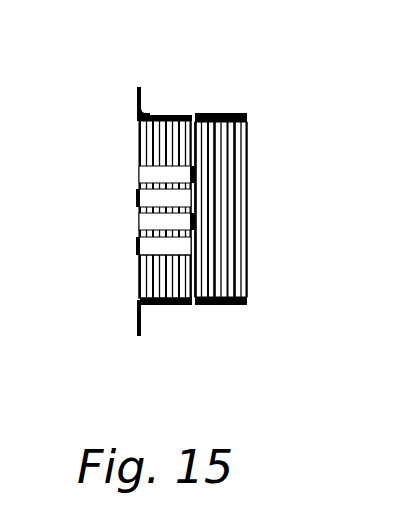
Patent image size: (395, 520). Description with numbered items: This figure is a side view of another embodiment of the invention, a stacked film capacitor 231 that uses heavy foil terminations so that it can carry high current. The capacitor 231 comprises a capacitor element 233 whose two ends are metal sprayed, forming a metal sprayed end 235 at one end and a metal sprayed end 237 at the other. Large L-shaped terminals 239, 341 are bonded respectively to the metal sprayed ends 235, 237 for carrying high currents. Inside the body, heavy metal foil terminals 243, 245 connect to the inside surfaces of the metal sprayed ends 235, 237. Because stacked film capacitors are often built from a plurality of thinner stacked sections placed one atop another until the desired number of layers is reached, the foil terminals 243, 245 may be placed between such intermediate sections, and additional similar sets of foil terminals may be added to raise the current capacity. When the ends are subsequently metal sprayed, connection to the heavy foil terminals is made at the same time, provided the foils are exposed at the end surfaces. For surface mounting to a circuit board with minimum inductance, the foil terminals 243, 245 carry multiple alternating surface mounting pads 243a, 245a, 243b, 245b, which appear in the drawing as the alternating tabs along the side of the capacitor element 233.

The capacitor 231 is at (140, 68).
The L-shaped terminal 239 is at (150, 98).
The metal sprayed end 235 is at (228, 105).
The capacitor element 233 is at (262, 172).
The heavy metal foil terminal 243 is at (127, 157).
The surface mounting pad 243a is at (127, 172).
The surface mounting pad 245a is at (127, 190).
The surface mounting pad 243b is at (127, 223).
The surface mounting pad 245b is at (130, 253).
The heavy metal foil terminal 245 is at (130, 267).
The metal sprayed end 237 is at (225, 315).
The L-shaped terminal 341 is at (142, 315).